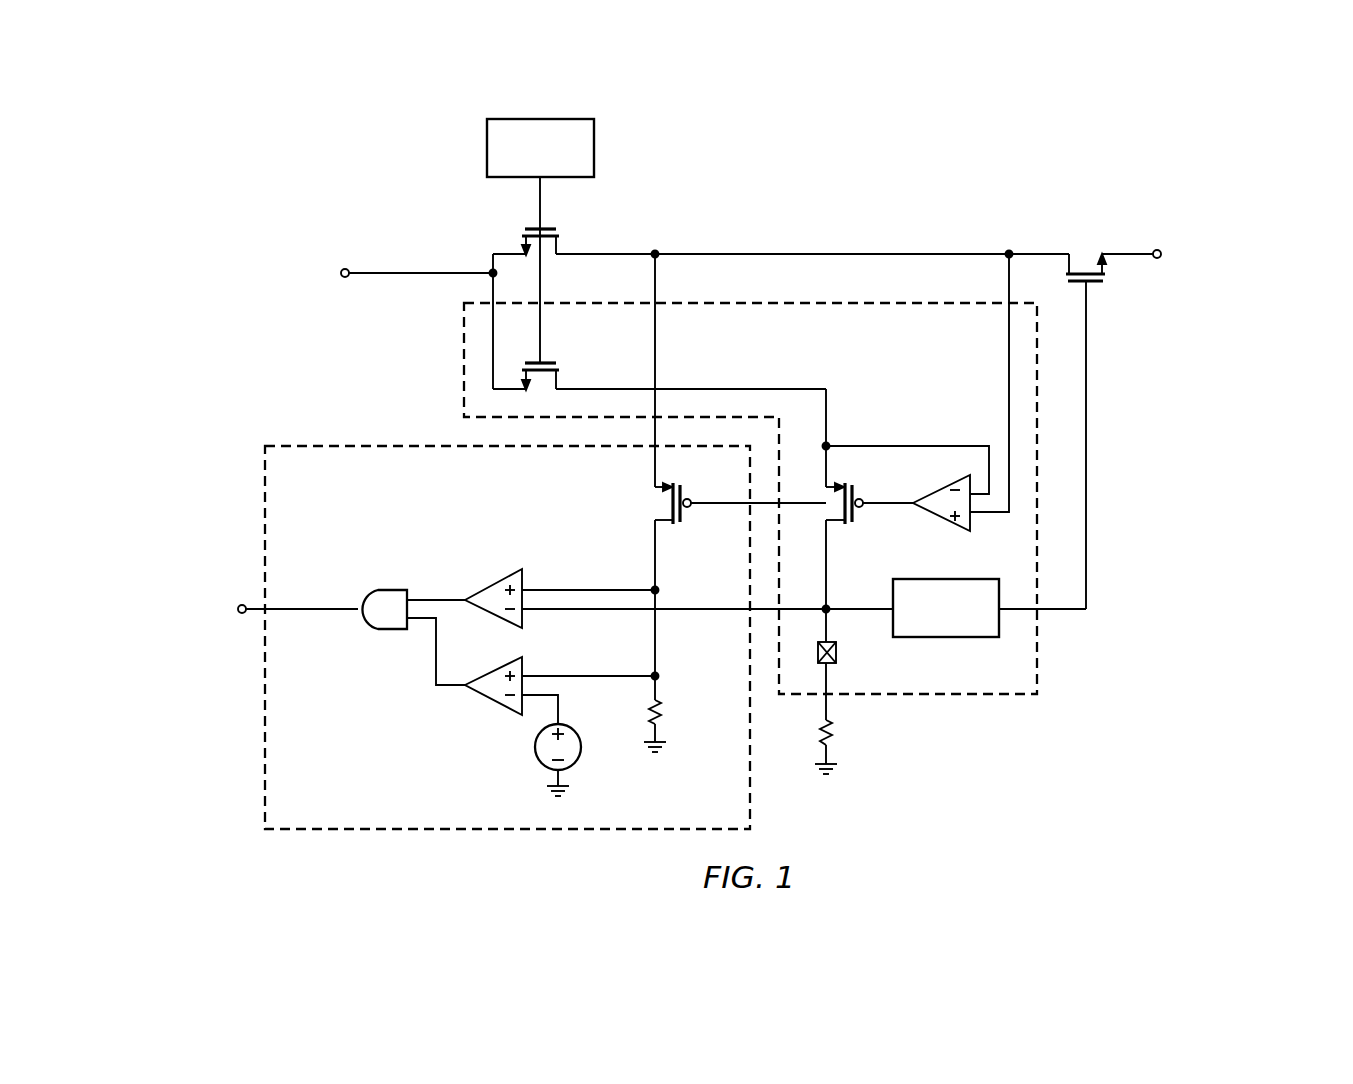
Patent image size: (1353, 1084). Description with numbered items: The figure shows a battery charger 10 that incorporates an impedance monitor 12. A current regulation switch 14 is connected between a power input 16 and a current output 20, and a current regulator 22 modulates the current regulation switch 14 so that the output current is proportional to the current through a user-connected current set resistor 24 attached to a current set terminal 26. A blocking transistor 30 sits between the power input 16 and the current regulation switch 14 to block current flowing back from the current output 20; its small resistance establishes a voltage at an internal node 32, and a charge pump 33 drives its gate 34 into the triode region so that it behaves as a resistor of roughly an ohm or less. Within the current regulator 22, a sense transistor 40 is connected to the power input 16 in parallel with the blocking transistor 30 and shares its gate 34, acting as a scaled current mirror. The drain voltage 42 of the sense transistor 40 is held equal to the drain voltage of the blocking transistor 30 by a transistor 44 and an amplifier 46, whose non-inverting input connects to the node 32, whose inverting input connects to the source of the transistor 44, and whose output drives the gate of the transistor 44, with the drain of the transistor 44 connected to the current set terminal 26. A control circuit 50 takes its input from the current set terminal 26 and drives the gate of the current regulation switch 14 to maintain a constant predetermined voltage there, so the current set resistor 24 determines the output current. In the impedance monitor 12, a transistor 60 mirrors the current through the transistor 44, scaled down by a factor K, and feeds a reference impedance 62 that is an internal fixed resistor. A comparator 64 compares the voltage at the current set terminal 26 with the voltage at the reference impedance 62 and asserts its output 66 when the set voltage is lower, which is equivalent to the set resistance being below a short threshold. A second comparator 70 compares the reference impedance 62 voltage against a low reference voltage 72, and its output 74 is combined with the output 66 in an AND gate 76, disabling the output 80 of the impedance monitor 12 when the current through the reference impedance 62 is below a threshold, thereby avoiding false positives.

The battery charger 10 is at (958, 186).
The impedance monitor 12 is at (404, 838).
The current regulation switch 14 is at (1090, 283).
The power input 16 is at (388, 272).
The current output 20 is at (1130, 254).
The current regulator 22 is at (928, 703).
The current set resistor 24 is at (833, 735).
The current set terminal 26 is at (838, 652).
The blocking transistor 30 is at (530, 229).
The internal node 32 is at (841, 254).
The charge pump 33 is at (597, 147).
The gate 34 is at (543, 210).
The sense transistor 40 is at (530, 363).
The drain voltage 42 is at (722, 389).
The transistor 44 is at (863, 492).
The amplifier 46 is at (945, 523).
The control circuit 50 is at (945, 637).
The transistor 60 is at (691, 492).
The reference impedance 62 is at (660, 713).
The comparator 64 is at (495, 583).
The output 66 is at (446, 597).
The comparator 70 is at (495, 703).
The reference voltage 72 is at (582, 747).
The output 74 is at (436, 662).
The AND gate 76 is at (388, 589).
The output 80 is at (342, 607).